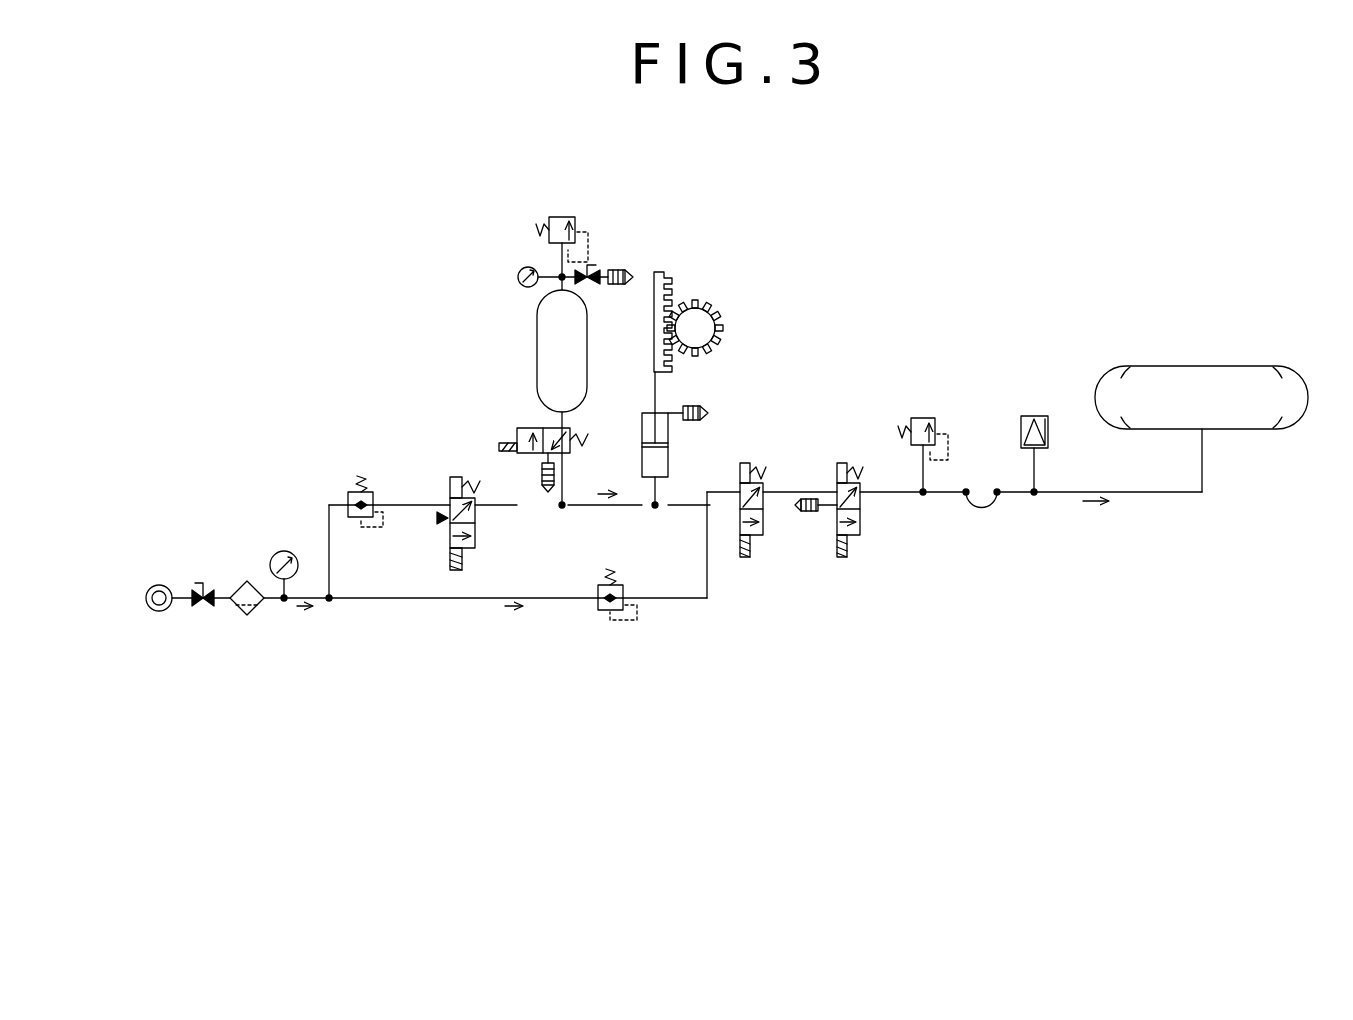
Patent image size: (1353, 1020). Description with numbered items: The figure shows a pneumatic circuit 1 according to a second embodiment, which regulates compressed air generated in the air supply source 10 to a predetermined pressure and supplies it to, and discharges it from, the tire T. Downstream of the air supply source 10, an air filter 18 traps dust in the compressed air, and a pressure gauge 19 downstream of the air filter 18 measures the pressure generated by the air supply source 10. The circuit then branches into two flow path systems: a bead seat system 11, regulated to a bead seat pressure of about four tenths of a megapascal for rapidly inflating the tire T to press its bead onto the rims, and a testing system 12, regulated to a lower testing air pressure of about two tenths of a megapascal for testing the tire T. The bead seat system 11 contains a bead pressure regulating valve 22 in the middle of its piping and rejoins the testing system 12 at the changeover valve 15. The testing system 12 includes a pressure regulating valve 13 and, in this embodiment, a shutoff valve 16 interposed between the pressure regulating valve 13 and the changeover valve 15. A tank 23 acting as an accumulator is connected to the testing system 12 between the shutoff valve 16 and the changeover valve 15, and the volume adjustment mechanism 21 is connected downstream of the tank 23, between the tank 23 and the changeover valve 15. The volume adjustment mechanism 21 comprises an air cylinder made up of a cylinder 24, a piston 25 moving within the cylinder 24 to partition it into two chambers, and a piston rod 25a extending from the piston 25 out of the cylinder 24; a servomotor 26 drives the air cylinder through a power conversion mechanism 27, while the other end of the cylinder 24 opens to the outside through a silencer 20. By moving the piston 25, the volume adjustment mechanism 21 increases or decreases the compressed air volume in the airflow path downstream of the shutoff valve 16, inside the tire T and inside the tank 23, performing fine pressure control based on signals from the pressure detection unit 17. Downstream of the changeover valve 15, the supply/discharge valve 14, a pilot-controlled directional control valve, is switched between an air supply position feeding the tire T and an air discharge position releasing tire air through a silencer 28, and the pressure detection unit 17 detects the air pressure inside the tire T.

The pneumatic circuit 1 is at (866, 237).
The air supply source 10 is at (159, 612).
The bead seat system 11 is at (404, 600).
The testing system 12 is at (408, 503).
The pressure regulating valve 13 is at (348, 495).
The supply/discharge valve 14 is at (838, 490).
The changeover valve 15 is at (762, 540).
The shutoff valve 16 is at (480, 497).
The pressure detection unit 17 is at (1010, 420).
The air filter 18 is at (246, 616).
The pressure gauge 19 is at (284, 550).
The silencer 20 is at (617, 265).
The volume adjustment mechanism 21 is at (706, 234).
The bead pressure regulating valve 22 is at (606, 612).
The tank 23 is at (545, 325).
The cylinder 24 is at (642, 463).
The piston 25 is at (641, 432).
The piston rod 25a is at (656, 390).
The servomotor 26 is at (716, 305).
The power conversion mechanism 27 is at (688, 277).
The silencer 28 is at (808, 512).
The tire T is at (1304, 366).